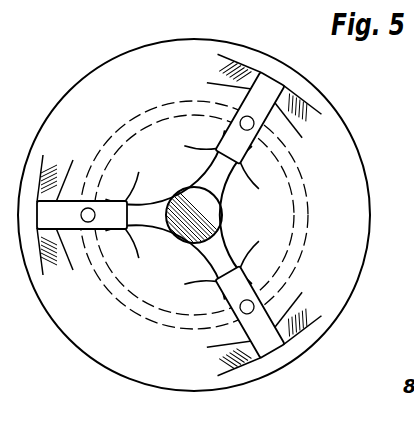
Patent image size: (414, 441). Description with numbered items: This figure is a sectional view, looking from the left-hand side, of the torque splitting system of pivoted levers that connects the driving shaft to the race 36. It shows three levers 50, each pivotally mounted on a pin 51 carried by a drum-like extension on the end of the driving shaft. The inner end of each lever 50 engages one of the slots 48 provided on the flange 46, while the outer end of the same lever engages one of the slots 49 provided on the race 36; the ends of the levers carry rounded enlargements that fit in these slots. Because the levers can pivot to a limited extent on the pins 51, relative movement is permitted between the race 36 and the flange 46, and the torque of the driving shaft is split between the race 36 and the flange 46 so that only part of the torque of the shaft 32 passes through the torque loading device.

The shaft 32 is at (180, 228).
The race 36 is at (352, 247).
The flange 46 is at (240, 205).
The slots 48 is at (232, 155).
The slots 49 is at (262, 70).
The levers 50 is at (252, 114).
The pins 51 is at (285, 133).